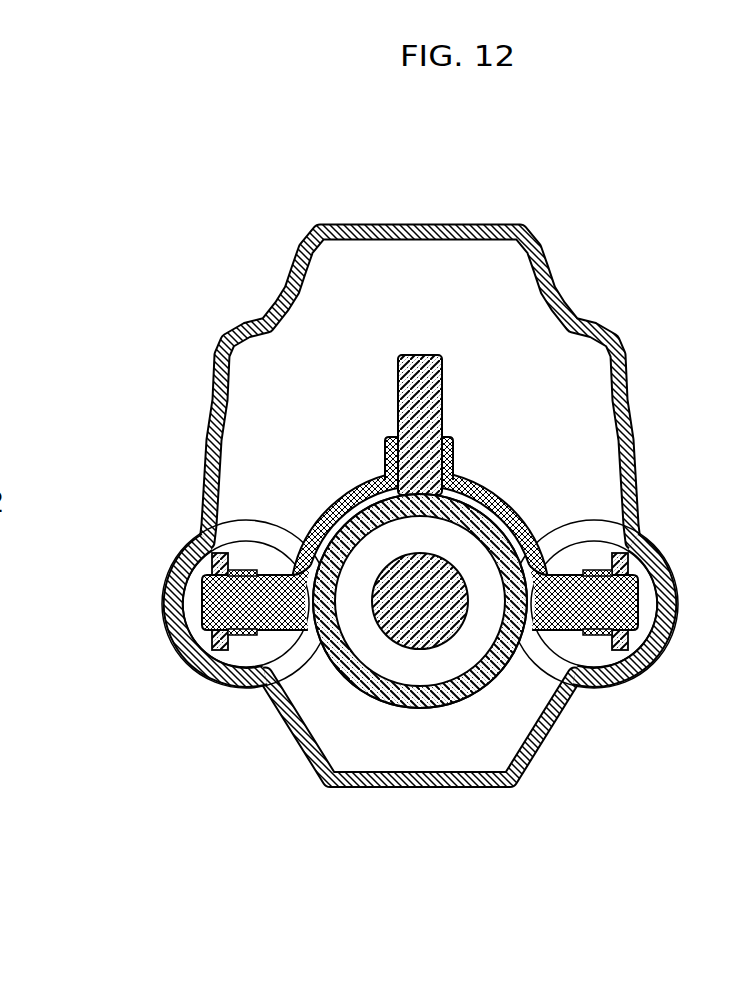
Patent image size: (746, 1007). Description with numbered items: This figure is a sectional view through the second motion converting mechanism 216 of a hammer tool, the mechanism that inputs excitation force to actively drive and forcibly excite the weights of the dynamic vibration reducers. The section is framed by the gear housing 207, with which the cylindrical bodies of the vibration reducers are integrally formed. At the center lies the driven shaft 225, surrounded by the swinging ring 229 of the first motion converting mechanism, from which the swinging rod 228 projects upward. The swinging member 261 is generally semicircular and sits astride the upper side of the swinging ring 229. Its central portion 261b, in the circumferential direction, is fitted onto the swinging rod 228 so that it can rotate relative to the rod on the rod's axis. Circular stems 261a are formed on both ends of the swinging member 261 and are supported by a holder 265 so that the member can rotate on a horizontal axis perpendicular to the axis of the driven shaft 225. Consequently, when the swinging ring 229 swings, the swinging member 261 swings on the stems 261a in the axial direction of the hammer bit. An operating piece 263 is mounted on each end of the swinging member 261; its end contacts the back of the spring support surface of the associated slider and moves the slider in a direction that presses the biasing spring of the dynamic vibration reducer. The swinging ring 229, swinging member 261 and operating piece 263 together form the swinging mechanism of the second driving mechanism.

The gear housing 207 is at (550, 261).
The second motion converting mechanism 216 is at (518, 500).
The driven shaft 225 is at (422, 645).
The swinging rod 228 is at (418, 352).
The swinging ring 229 is at (401, 716).
The swinging member 261 is at (487, 478).
The circular stems 261a is at (201, 600).
The central portion 261b is at (380, 440).
The operating piece 263 is at (243, 635).
The holder 265 is at (220, 653).